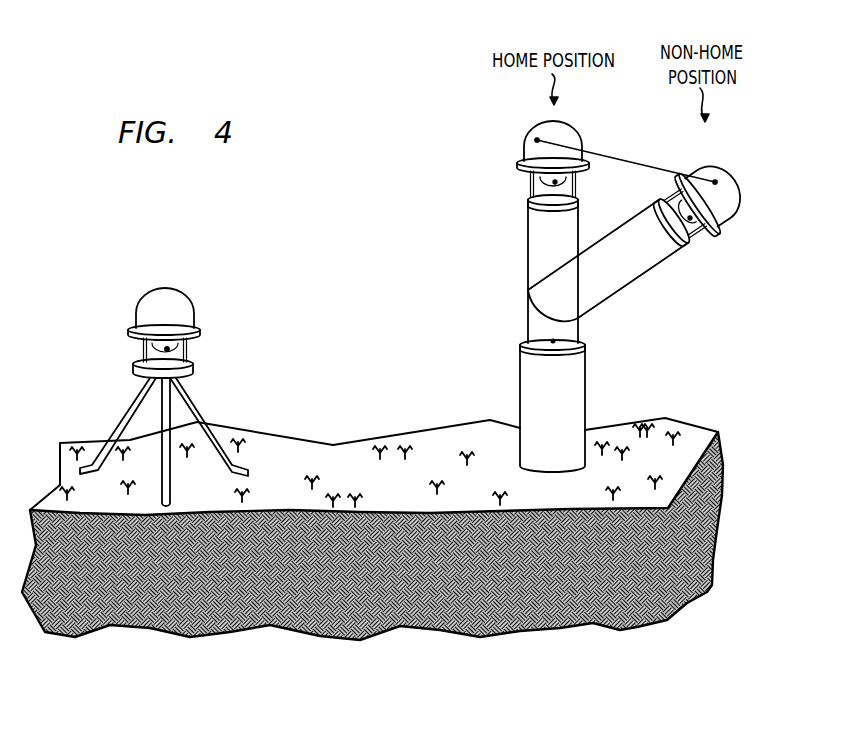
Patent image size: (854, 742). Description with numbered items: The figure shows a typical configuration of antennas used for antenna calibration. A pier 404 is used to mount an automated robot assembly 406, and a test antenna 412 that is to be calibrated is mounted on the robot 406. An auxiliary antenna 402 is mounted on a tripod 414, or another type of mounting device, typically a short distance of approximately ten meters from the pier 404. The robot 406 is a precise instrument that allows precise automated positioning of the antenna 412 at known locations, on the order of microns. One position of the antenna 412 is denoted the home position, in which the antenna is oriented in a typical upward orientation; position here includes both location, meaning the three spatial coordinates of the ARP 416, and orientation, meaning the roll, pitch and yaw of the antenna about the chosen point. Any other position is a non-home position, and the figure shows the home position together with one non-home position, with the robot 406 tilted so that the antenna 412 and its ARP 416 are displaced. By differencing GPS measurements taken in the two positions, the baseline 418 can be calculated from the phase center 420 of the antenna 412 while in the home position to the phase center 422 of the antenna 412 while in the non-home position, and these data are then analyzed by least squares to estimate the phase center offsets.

The auxiliary antenna 402 is at (184, 295).
The pier 404 is at (520, 382).
The automated robot assembly 406 is at (648, 310).
The test antenna 412 is at (572, 131).
The tripod 414 is at (202, 409).
The ARP 416 is at (553, 183).
The baseline 418 is at (624, 153).
The phase center 420 is at (537, 140).
The phase center 422 is at (715, 182).